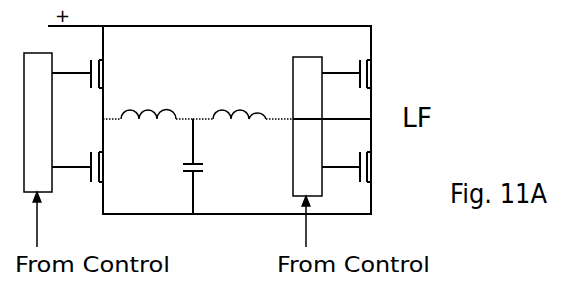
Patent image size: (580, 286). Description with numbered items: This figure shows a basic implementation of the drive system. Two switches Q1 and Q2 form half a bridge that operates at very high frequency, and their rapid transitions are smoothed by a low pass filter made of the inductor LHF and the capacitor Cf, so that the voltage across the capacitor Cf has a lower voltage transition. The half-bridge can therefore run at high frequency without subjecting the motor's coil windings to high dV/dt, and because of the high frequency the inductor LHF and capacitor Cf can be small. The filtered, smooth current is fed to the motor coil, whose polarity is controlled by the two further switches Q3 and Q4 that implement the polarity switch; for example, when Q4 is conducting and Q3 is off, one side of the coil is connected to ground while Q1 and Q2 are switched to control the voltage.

The high-frequency half-bridge switch Q1 is at (77, 63).
The high-frequency half-bridge switch Q2 is at (77, 159).
The polarity switch transistor Q3 is at (346, 63).
The polarity switch transistor Q4 is at (346, 161).
The low pass filter inductor LHF is at (148, 99).
The motor coil is at (282, 99).
The filter capacitor Cf is at (208, 166).